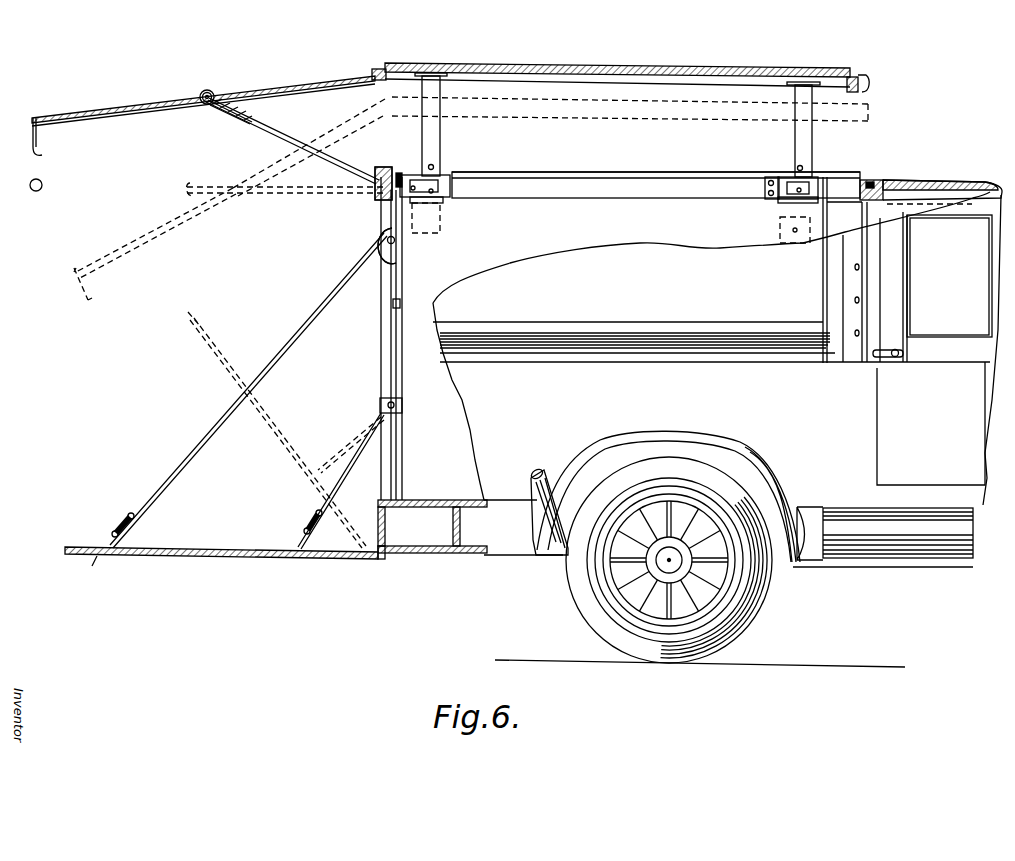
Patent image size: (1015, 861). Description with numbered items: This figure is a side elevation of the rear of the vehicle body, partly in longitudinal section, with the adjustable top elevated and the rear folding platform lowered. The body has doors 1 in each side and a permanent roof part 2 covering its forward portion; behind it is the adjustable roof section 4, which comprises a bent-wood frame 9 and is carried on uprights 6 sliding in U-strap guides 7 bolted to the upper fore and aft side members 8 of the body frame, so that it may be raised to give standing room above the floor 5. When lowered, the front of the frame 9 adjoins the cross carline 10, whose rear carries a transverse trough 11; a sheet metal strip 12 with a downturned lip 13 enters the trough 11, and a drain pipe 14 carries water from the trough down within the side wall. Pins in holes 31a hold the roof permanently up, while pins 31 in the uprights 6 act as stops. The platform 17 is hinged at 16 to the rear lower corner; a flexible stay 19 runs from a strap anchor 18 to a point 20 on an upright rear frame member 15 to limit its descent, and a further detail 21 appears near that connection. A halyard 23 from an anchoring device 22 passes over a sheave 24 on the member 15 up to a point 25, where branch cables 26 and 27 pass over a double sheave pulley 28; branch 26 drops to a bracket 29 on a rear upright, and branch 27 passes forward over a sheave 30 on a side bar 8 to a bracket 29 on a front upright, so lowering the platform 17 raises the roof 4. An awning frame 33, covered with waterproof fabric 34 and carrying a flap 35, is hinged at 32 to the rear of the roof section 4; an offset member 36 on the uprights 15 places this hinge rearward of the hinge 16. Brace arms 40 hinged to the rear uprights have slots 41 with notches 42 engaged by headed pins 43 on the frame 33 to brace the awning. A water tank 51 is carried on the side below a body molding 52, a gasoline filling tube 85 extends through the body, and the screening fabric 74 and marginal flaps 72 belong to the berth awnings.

The doors 1 is at (936, 435).
The permanent roof part 2 is at (940, 182).
The adjustable roof section 4 is at (610, 58).
The floor 5 is at (446, 482).
The uprights 6 is at (433, 138).
The guides 7 is at (455, 184).
The side members 8 is at (583, 183).
The frame 9 is at (740, 88).
The cross carline 10 is at (888, 182).
The transverse trough 11 is at (872, 180).
The strip of sheet metal 12 is at (858, 76).
The downturned lip 13 is at (868, 86).
The drain pipe 14 is at (863, 205).
The upright rear frame members 15 is at (381, 349).
The hinge 16 is at (377, 560).
The platform 17 is at (190, 325).
The strap anchors 18 is at (112, 543).
The flexible stay 19 is at (203, 449).
The connection point of stay 20 is at (382, 233).
The hook end 21 is at (378, 258).
The anchoring devices 22 is at (298, 545).
The halyard 23 is at (380, 415).
The sheave 24 is at (402, 410).
The branch point 25 is at (395, 304).
The branch cable 26 is at (400, 237).
The outer branch cable 27 is at (645, 183).
The double sheave pulley 28 is at (385, 168).
The bracket 29 is at (440, 203).
The sheave 30 is at (772, 178).
The pins 31 is at (443, 196).
The holes 31a is at (435, 167).
The hinge 32 is at (377, 69).
The awning and cover frame 33 is at (95, 122).
The waterproof fabric 34 is at (137, 108).
The flap 35 is at (22, 160).
The offset member 36 is at (373, 195).
The brace arms 40 is at (260, 129).
The slots 41 is at (228, 112).
The offset notch 42 is at (204, 94).
The headed pins 43 is at (212, 92).
The water tank 51 is at (862, 550).
The body molding 52 is at (700, 340).
The marginal flaps 72 is at (855, 340).
The screening and protecting fabric 74 is at (712, 338).
The gasoline filling tube 85 is at (553, 470).